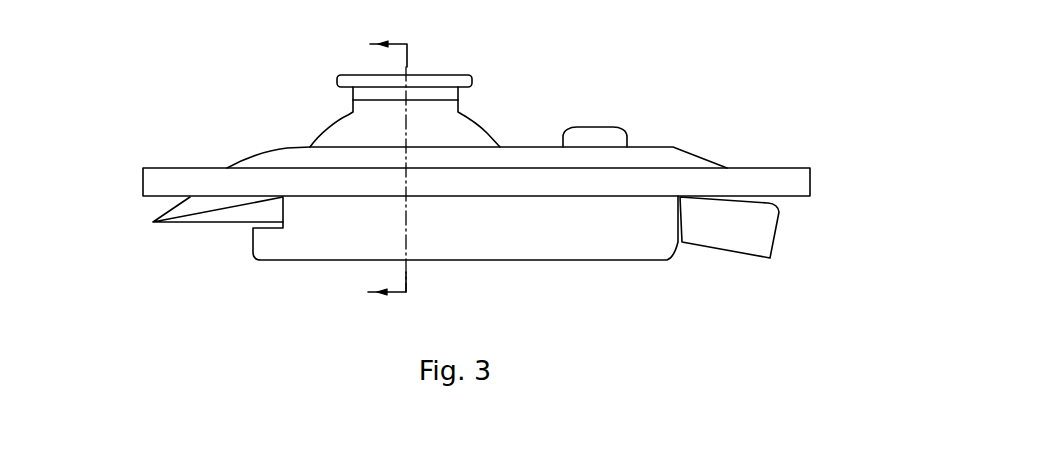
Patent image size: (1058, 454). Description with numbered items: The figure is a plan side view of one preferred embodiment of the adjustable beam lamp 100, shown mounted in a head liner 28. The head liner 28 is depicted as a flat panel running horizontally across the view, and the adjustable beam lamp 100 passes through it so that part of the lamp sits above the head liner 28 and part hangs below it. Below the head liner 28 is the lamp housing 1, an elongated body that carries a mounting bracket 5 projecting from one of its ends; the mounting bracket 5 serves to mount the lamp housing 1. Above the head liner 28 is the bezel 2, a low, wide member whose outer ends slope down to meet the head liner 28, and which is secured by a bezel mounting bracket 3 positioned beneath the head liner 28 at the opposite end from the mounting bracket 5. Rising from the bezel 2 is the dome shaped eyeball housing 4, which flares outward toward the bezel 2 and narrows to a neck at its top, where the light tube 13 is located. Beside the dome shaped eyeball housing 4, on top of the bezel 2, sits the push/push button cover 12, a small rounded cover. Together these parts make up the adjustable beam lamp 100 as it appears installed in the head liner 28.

The adjustable beam lamp 100 is at (743, 112).
The head liner 28 is at (157, 183).
The bezel 2 is at (270, 162).
The dome shaped eyeball housing 4 is at (467, 135).
The light tube 13 is at (437, 87).
The push/push button cover 12 is at (595, 137).
The bezel mounting bracket 3 is at (217, 212).
The lamp housing 1 is at (585, 242).
The mounting bracket 5 is at (738, 237).